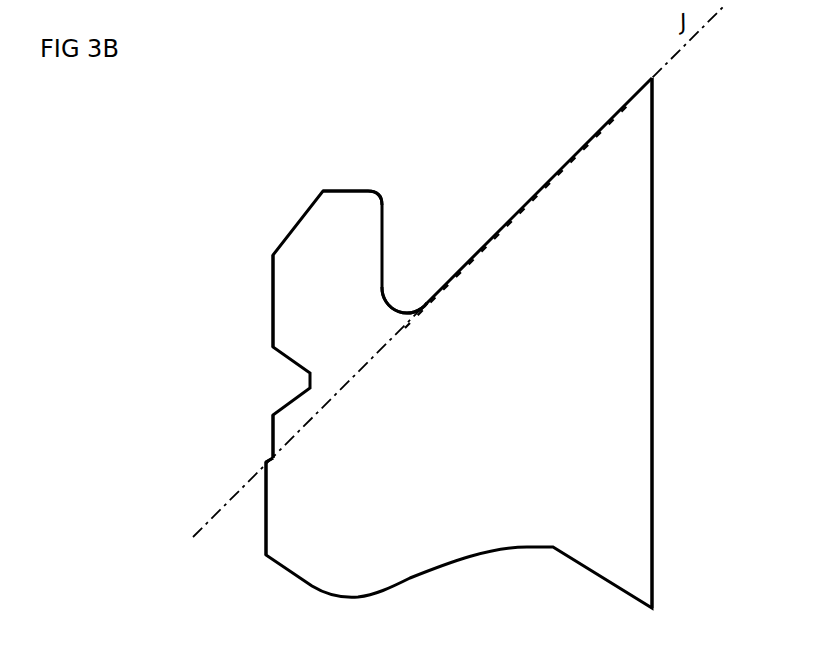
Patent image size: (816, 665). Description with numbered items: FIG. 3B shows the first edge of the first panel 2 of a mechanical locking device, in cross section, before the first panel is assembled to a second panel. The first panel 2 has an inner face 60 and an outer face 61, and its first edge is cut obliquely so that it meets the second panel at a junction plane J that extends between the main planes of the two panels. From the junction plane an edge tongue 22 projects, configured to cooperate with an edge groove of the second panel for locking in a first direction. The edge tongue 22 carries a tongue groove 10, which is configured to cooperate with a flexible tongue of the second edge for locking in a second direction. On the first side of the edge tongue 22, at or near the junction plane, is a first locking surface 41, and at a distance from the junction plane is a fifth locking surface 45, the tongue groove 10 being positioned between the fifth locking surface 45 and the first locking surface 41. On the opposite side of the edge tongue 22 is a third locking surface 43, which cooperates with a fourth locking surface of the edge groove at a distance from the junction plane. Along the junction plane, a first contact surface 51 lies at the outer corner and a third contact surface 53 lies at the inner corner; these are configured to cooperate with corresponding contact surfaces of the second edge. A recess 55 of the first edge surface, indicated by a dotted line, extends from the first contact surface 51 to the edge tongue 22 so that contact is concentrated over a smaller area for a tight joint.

The first panel 2 is at (598, 257).
The tongue groove 10 is at (285, 388).
The edge tongue 22 is at (327, 219).
The first locking surface 41 is at (273, 437).
The third locking surface 43 is at (383, 239).
The fifth locking surface 45 is at (273, 303).
The first contact surface 51 is at (632, 97).
The third contact surface 53 is at (266, 462).
The recess 55 is at (535, 196).
The inner face 60 is at (266, 522).
The outer face 61 is at (652, 427).